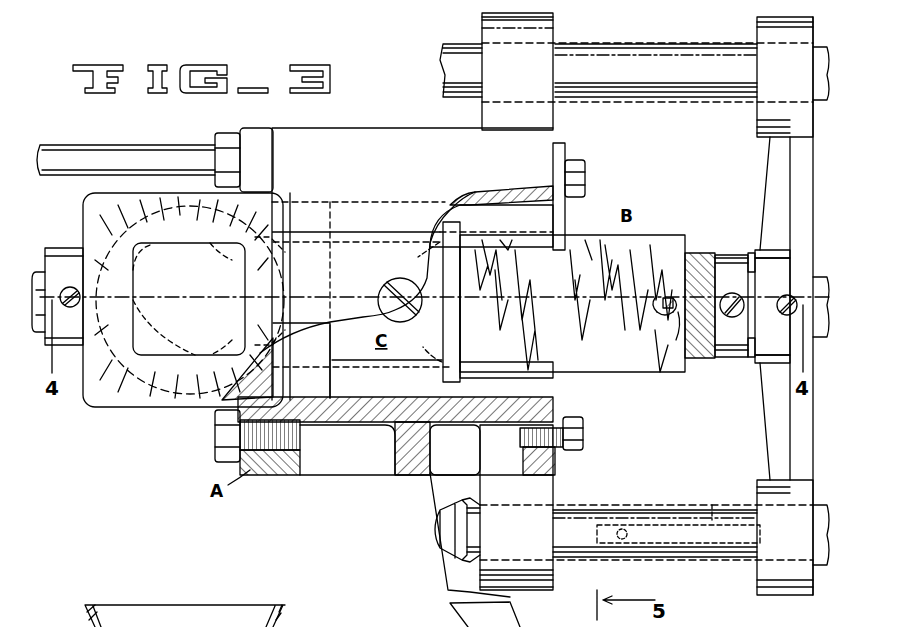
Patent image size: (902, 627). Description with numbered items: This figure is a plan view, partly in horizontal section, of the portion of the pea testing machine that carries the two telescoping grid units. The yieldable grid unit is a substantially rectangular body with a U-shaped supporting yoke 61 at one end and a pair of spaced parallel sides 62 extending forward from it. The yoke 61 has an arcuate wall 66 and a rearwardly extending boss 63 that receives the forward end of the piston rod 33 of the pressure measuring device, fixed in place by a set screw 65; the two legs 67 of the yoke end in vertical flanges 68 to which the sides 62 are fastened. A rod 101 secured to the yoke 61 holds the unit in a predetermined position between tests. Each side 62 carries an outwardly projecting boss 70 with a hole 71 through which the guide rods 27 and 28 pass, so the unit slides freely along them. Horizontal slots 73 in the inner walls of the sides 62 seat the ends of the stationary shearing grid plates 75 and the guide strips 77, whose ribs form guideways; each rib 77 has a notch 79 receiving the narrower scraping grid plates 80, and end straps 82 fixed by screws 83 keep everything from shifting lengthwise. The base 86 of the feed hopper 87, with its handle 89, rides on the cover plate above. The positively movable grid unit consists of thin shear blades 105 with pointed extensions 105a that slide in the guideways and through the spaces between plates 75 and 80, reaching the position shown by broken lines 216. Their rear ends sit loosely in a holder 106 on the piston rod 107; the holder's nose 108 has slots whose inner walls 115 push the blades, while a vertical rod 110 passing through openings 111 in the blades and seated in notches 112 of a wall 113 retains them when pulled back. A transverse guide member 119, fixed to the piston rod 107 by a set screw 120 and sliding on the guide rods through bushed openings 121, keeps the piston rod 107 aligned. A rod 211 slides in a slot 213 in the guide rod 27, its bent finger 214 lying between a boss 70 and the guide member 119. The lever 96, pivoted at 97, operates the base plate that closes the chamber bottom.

The rod 101 is at (100, 160).
The vertically disposed flanges 68 is at (262, 128).
The sides 62 is at (378, 143).
The feed hopper 87 is at (135, 405).
The supporting yoke 61 is at (150, 345).
The arcuate wall 66 is at (147, 250).
The legs 67 is at (210, 244).
The broken lines 216 is at (258, 280).
The boss 63 is at (64, 296).
The piston rod 33 is at (40, 275).
The set screw 65 is at (78, 304).
The grid plates 75 is at (301, 360).
The base of feed hopper 86 is at (367, 272).
The handle 89 is at (378, 297).
The pointed extensions 105a is at (412, 302).
The slots 73 is at (510, 200).
The notch 79 is at (455, 224).
The guide strips 77 is at (535, 232).
The grid plates 80 is at (458, 332).
The shear blades 105 is at (572, 303).
The holder 106 is at (722, 352).
The inner walls 115 is at (668, 300).
The nose 108 is at (658, 300).
The notches 112 is at (668, 298).
The wall 113 is at (665, 312).
The rod 110 is at (678, 315).
The openings 111 is at (666, 339).
The guide member 119 is at (772, 425).
The set screw 120 is at (776, 306).
The piston rod 107 is at (820, 290).
The boss 70 is at (646, 301).
The hole 71 is at (490, 45).
The guide rod 28 is at (640, 52).
The bushed openings 121 is at (765, 45).
The end straps 82 is at (565, 150).
The screws 83 is at (585, 178).
The guide rod 27 is at (705, 560).
The rod 211 is at (825, 537).
The slot 213 is at (712, 505).
The finger 214 is at (625, 528).
The lever 96 is at (435, 490).
The pivot 97 is at (448, 528).